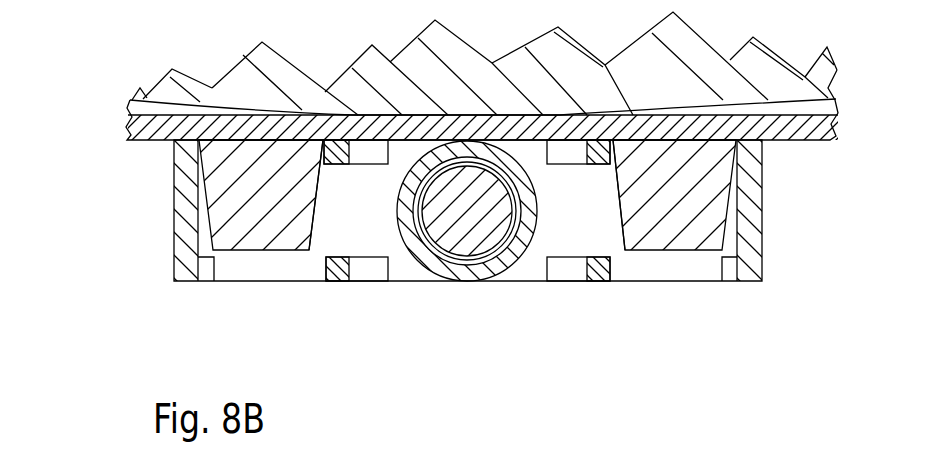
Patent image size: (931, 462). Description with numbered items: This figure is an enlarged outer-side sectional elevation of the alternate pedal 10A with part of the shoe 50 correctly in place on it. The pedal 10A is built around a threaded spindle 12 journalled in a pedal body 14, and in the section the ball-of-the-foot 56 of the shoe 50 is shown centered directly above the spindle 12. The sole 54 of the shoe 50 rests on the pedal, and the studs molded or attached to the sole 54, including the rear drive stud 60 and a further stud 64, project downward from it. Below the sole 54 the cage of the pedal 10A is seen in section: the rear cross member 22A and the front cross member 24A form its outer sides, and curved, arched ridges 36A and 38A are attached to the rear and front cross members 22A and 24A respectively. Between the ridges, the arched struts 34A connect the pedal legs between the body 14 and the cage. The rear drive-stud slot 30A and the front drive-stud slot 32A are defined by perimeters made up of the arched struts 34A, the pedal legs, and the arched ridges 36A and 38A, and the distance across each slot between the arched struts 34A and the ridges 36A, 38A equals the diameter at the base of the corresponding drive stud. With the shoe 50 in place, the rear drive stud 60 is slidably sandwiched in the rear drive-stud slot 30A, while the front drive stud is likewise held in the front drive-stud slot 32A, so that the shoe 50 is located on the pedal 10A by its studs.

The shoe 50 is at (121, 114).
The sole 54 is at (150, 136).
The ball-of-the-foot 56 is at (457, 98).
The pedal 10A is at (160, 256).
The threaded spindle 12 is at (473, 205).
The pedal body 14 is at (527, 240).
The rear cross member 22A is at (185, 215).
The front cross member 24A is at (752, 200).
The rear drive-stud slot 30A is at (267, 140).
The front drive-stud slot 32A is at (678, 142).
The arched struts 34A is at (342, 160).
The rear arched ridge 36A is at (197, 159).
The front arched ridge 38A is at (748, 147).
The rear drive stud 60 is at (260, 198).
The stud 64 is at (683, 197).